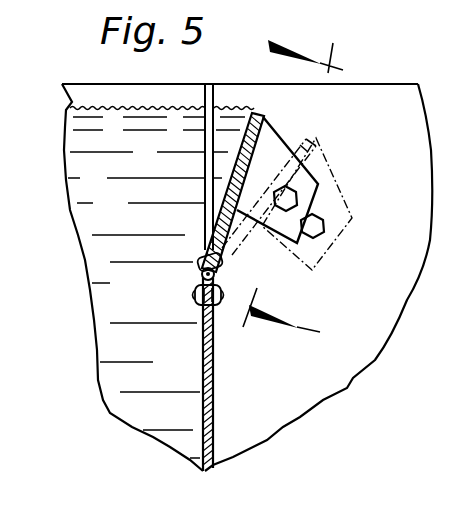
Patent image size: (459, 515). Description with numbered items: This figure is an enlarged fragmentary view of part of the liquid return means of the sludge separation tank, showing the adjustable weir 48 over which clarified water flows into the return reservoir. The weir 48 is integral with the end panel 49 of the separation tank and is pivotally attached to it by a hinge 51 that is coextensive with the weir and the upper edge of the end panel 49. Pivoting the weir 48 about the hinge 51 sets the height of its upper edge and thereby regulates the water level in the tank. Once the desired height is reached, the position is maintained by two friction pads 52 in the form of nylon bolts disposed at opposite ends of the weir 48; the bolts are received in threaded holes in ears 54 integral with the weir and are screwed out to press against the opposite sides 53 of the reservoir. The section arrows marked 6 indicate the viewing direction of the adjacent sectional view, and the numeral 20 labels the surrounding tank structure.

The vessel / tank wall 20 is at (78, 90).
The weir 48 is at (256, 126).
The end panel 49 is at (212, 373).
The hinge 51 is at (202, 274).
The friction pads 52 is at (318, 183).
The sides 53 is at (352, 360).
The ears 54 is at (273, 147).
The section line 6- 6 is at (309, 190).